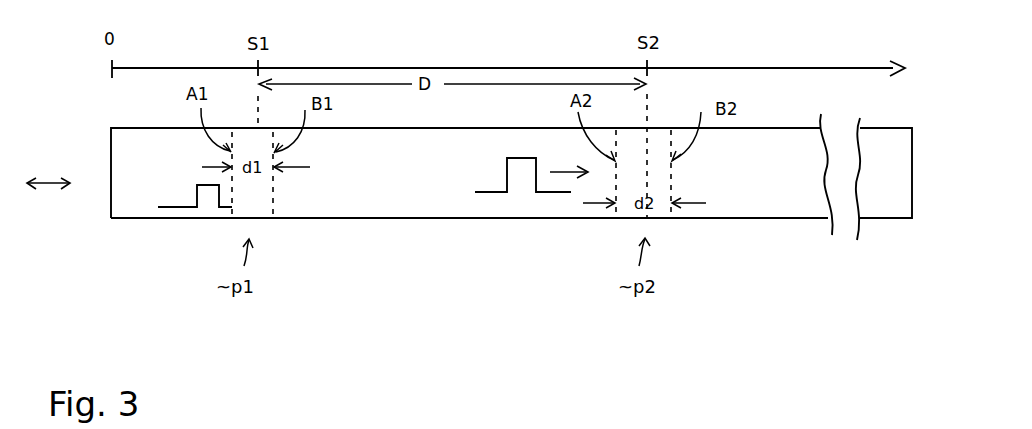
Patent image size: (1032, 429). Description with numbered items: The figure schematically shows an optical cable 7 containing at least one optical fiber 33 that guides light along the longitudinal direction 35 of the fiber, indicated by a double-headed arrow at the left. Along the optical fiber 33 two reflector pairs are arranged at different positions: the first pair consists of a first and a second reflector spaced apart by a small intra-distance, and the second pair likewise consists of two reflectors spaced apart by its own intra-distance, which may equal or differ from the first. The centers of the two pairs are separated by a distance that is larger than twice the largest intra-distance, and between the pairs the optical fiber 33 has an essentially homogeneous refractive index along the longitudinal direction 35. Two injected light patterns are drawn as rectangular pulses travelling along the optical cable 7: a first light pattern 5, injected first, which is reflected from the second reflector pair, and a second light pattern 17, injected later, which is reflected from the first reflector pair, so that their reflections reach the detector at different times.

The optical fiber 33 is at (776, 218).
The longitudinal direction 35 is at (52, 183).
The second light pattern 17 is at (197, 184).
The first light pattern 5 is at (531, 164).
The optical cable 7 is at (345, 284).